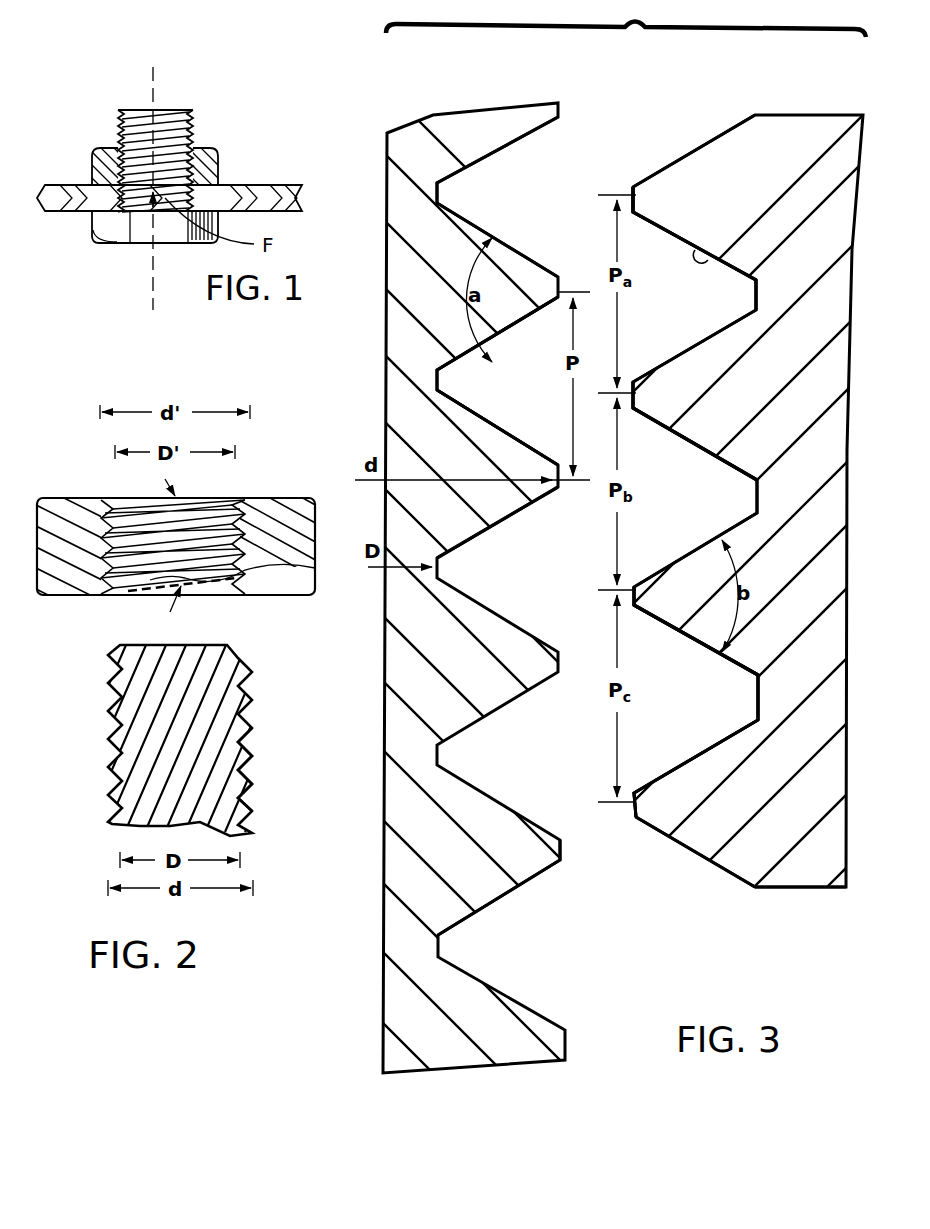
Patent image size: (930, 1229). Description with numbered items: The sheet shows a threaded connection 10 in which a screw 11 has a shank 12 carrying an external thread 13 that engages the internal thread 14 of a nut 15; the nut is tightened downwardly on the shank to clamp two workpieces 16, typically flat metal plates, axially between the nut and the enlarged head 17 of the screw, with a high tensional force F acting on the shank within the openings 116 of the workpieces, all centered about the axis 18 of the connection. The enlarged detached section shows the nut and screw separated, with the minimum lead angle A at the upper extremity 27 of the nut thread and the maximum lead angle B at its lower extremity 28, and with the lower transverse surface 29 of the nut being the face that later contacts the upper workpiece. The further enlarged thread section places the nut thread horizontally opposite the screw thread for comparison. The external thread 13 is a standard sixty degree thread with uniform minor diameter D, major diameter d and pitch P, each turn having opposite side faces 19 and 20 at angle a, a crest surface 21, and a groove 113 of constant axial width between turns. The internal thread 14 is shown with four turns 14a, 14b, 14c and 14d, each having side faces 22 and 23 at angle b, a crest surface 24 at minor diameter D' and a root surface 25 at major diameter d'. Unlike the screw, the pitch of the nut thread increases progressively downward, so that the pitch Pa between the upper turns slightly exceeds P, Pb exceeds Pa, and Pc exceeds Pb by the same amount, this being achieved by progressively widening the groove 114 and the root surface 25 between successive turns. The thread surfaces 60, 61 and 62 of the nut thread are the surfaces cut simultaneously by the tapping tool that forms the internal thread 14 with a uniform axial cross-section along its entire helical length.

In FIG. 1, the threaded connection 10 is at (184, 86).
In FIG. 1, the screw 11 is at (137, 106).
In FIG. 3, the screw 11 is at (463, 126).
In FIG. 1, the shank 12 is at (126, 114).
In FIG. 2, the shank 12 is at (258, 785).
In FIG. 1, the external thread 13 is at (190, 109).
In FIG. 2, the external thread 13 is at (250, 726).
In FIG. 3, the external thread 13 is at (490, 908).
In FIG. 1, the internal thread 14 is at (192, 142).
In FIG. 3, the internal thread 14 is at (694, 144).
In FIG. 1, the nut 15 is at (100, 148).
In FIG. 2, the nut 15 is at (290, 498).
In FIG. 3, the nut 15 is at (786, 116).
In FIG. 1, the workpieces 16 is at (277, 185).
In FIG. 1, the enlarged head 17 is at (112, 220).
In FIG. 1, the axis 18 is at (150, 256).
In FIG. 1, the openings 116 is at (115, 216).
In FIG. 3, the groove 113 is at (450, 191).
In FIG. 3, the groove 114 is at (746, 300).
In FIG. 3, the side face 19 is at (510, 246).
In FIG. 3, the side face 20 is at (480, 356).
In FIG. 3, the crest surface 21 is at (565, 856).
In FIG. 3, the side face 22 is at (703, 548).
In FIG. 3, the side face 23 is at (672, 622).
In FIG. 3, the crest surface 24 is at (636, 812).
In FIG. 3, the root surface 25 is at (757, 700).
In FIG. 2, the upper extremity of the nut thread 27 is at (152, 497).
In FIG. 2, the lower extremity of the nut thread 28 is at (146, 596).
In FIG. 2, the lower transverse surface 29 is at (255, 597).
In FIG. 3, the lower transverse surface 29 is at (795, 889).
In FIG. 3, the thread surface 60 is at (670, 160).
In FIG. 3, the thread surface 61 is at (632, 193).
In FIG. 3, the thread surface 62 is at (712, 257).
In FIG. 3, the first turn of nut thread 14a is at (655, 198).
In FIG. 3, the second turn of nut thread 14b is at (645, 395).
In FIG. 3, the third turn of nut thread 14c is at (652, 590).
In FIG. 3, the fourth turn of nut thread 14d is at (650, 800).